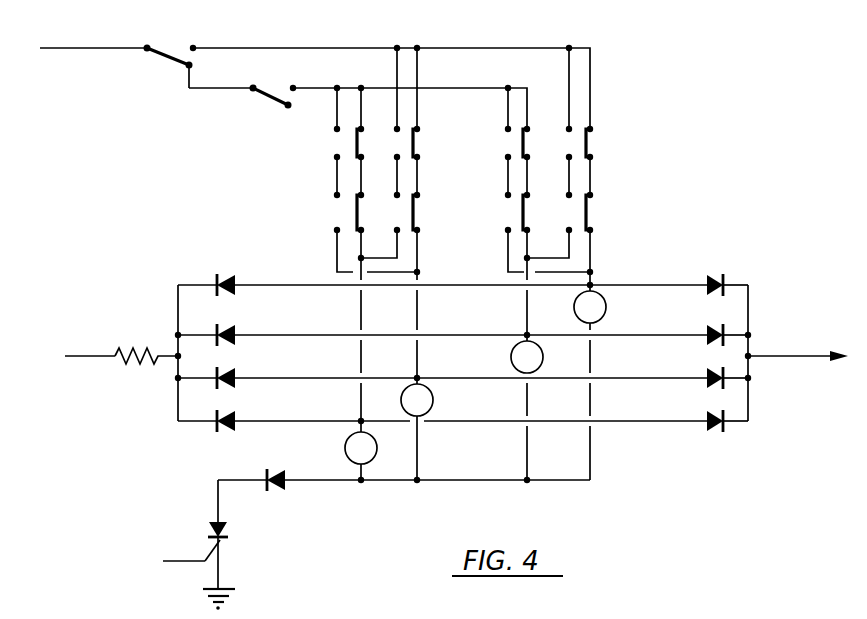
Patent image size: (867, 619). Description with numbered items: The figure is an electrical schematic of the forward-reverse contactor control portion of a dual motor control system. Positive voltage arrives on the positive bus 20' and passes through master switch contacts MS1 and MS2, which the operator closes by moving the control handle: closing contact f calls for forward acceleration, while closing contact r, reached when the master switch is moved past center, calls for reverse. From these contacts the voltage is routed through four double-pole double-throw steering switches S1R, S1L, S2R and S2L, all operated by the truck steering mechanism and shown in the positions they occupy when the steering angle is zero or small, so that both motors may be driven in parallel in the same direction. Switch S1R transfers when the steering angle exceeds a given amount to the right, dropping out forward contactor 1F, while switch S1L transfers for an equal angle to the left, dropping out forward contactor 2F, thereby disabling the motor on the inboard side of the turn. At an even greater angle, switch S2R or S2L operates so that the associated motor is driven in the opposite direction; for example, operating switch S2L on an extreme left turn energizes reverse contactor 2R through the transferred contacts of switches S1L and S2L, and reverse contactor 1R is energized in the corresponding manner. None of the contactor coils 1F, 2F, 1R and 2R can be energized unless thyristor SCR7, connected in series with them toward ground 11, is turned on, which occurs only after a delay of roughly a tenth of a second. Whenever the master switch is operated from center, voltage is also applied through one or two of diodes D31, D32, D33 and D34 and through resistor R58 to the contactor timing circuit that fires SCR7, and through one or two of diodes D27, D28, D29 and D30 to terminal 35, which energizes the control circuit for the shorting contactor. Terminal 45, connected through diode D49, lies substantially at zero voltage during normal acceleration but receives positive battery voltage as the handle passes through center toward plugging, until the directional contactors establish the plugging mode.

The positive bus 20' is at (87, 35).
The master switch MS1 is at (172, 52).
The master switch MS2 is at (276, 92).
The master switch contact f is at (393, 75).
The master switch contact r is at (411, 96).
The steering switch S1R is at (430, 143).
The steering switch S1L is at (500, 143).
The steering switch S2R is at (430, 212).
The steering switch S2L is at (500, 212).
The reverse contactor 1R is at (361, 448).
The forward contactor 1F is at (417, 400).
The reverse contactor 2R is at (527, 357).
The forward contactor 2F is at (590, 307).
The diode D34 is at (237, 291).
The diode D33 is at (237, 341).
The diode D32 is at (237, 384).
The diode D31 is at (237, 427).
The diode D30 is at (704, 281).
The diode D29 is at (704, 331).
The diode D27 is at (704, 375).
The diode D28 is at (704, 418).
The resistor R58 is at (121, 347).
The terminal 35 is at (752, 354).
The terminal 45 is at (475, 482).
The diode D49 is at (287, 486).
The thyristor SCR7 is at (226, 529).
The ground 11 is at (226, 568).